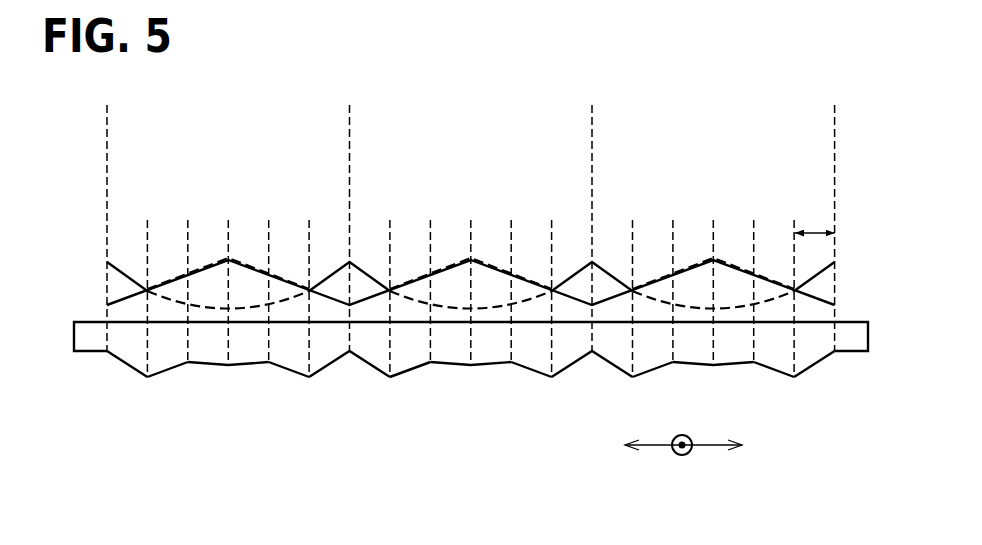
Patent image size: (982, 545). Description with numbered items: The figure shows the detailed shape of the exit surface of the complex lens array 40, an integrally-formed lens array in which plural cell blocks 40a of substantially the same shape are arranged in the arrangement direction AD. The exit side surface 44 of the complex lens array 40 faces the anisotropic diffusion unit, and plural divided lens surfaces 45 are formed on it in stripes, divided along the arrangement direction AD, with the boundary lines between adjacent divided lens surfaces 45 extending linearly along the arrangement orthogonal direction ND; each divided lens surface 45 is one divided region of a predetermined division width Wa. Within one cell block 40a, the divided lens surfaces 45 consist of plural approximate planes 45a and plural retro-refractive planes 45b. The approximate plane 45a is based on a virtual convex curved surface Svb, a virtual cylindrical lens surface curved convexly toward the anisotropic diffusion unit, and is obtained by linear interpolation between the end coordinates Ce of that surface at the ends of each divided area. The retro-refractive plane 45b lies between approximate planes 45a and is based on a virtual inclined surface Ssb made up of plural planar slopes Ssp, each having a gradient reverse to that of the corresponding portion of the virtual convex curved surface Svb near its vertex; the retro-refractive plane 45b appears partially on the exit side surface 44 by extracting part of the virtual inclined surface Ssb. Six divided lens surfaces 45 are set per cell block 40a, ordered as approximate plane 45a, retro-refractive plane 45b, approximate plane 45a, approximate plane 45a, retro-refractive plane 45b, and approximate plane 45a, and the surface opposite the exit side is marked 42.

The complex lens array 40 is at (867, 338).
The cell block 40a is at (350, 126).
The first surface 42 is at (813, 321).
The exit side surface 44 is at (482, 412).
The divided lens surface 45 is at (448, 412).
The approximate plane 45a is at (128, 367).
The retro-refractive plane 45b is at (160, 373).
The end coordinates Ce is at (351, 263).
The virtual inclined surface Ssb is at (201, 303).
The planar slope Ssp is at (220, 268).
The virtual convex curved surface Svb is at (116, 279).
The division width Wa is at (818, 232).
The arrangement orthogonal direction ND is at (682, 456).
The arrangement direction AD is at (710, 448).